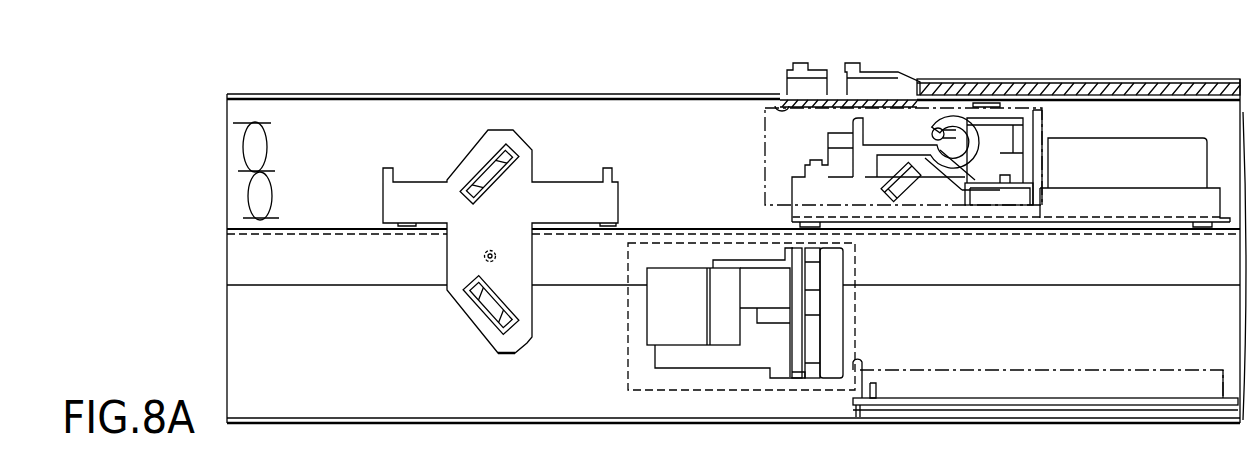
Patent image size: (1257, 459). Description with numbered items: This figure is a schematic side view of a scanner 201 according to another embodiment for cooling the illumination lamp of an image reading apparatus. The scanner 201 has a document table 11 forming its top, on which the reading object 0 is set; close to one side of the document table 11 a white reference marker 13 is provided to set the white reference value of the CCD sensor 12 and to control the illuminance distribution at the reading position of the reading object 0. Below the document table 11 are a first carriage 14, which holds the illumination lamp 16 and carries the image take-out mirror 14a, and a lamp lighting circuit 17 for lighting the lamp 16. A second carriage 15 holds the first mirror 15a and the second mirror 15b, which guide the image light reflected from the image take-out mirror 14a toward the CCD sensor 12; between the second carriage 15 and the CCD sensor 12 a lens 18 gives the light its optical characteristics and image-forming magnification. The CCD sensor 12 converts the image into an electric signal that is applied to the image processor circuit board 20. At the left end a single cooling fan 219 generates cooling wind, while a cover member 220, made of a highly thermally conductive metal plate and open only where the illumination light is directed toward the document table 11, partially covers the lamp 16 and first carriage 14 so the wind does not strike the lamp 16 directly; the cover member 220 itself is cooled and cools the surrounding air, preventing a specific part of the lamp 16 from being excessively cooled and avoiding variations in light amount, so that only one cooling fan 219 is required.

The scanner 201 is at (628, 70).
The cooling fan 219 is at (262, 222).
The second carriage 15 is at (536, 155).
The first mirror 15a is at (478, 165).
The second mirror 15b is at (476, 312).
The white reference marker 13 is at (773, 105).
The document table 11 is at (1097, 95).
The chassis plate 0 is at (1010, 79).
The cover member 220 is at (765, 137).
The illumination lamp 16 is at (932, 134).
The image take-out mirror 14a is at (882, 200).
The first carriage 14 is at (998, 200).
The lamp lighting circuit 17 is at (1163, 138).
The lens 18 is at (647, 318).
The CCD sensor 12 is at (840, 338).
The image processor circuit board 20 is at (1128, 368).